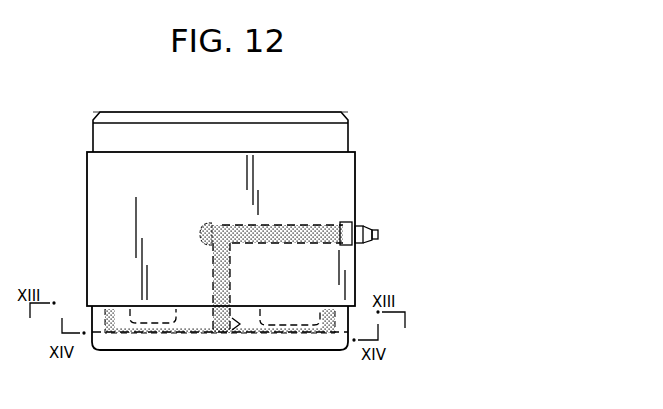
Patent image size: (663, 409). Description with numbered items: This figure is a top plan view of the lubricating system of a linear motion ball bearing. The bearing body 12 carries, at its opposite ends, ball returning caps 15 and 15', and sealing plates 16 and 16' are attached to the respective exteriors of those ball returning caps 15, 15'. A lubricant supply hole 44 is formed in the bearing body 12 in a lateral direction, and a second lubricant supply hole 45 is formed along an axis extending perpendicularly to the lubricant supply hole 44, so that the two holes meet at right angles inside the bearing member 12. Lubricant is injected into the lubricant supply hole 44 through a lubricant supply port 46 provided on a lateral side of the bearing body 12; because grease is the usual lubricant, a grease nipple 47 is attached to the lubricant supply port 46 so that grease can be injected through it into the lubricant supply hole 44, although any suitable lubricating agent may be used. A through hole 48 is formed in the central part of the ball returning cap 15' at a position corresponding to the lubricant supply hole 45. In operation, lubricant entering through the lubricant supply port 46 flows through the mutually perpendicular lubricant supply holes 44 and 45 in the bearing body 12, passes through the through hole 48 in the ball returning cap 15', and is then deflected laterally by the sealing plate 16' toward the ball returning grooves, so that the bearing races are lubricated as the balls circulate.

The bearing body 12 is at (87, 196).
The ball returning cap 15 is at (220, 89).
The sealing plate 16 is at (220, 109).
The ball returning cap 15' is at (229, 360).
The sealing plate 16' is at (220, 348).
The lubricant supply hole 44 is at (318, 228).
The lubricant supply hole 45 is at (212, 273).
The lubricant supply port 46 is at (357, 249).
The grease nipple 47 is at (366, 227).
The through hole 48 is at (243, 338).